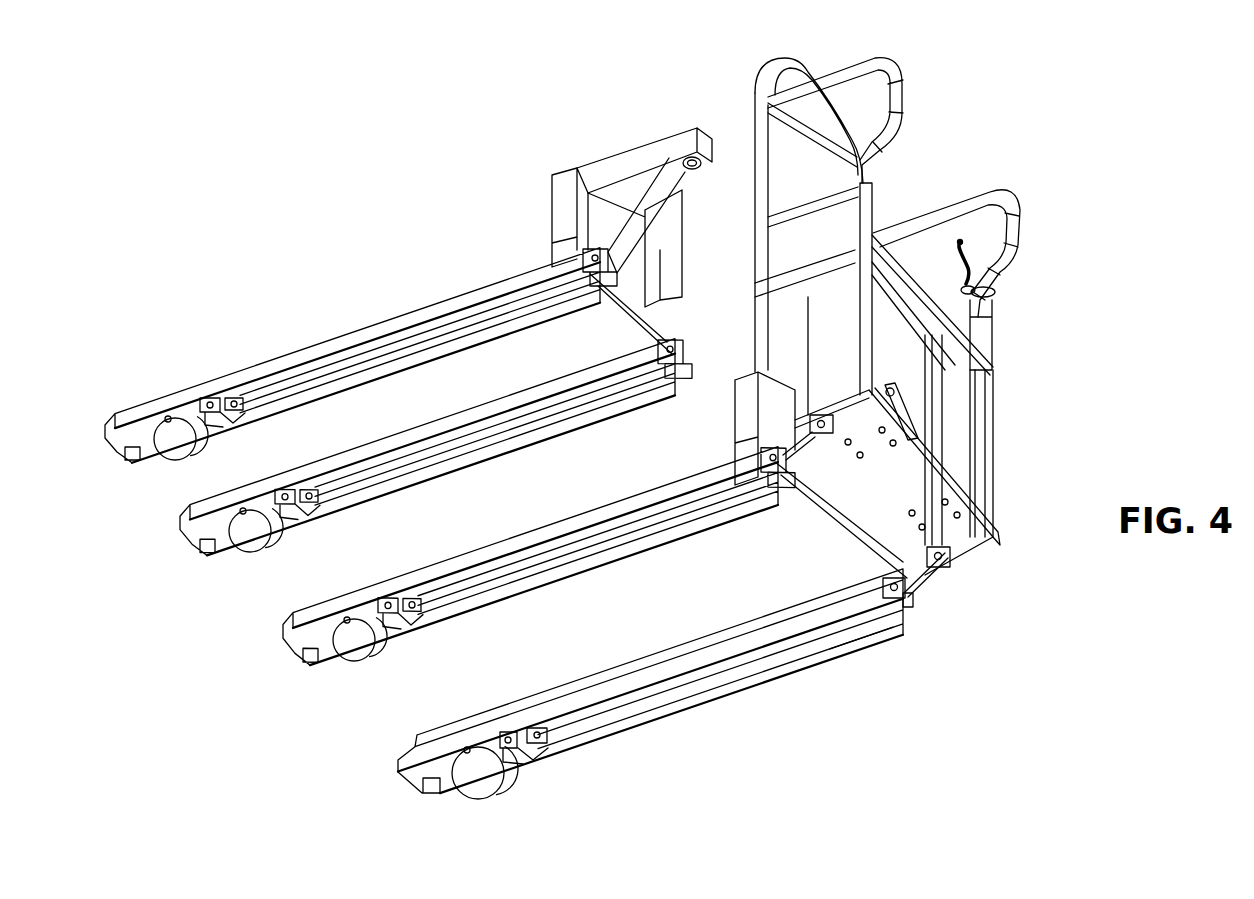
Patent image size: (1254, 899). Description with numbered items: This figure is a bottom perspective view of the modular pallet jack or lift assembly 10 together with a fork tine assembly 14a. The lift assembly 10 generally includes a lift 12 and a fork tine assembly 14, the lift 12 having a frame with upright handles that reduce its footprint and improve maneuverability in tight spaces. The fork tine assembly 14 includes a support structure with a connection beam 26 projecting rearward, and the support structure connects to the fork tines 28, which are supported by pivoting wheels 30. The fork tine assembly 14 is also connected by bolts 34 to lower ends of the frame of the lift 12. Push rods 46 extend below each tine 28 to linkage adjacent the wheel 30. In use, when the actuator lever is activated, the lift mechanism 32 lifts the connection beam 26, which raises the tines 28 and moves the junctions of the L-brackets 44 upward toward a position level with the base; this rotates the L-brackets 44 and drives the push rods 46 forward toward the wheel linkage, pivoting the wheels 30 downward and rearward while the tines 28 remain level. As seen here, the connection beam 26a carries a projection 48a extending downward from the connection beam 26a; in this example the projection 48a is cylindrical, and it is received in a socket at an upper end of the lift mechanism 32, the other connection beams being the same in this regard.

The lift assembly 10 is at (953, 87).
The lift 12 is at (753, 93).
The fork tine assembly 14 is at (740, 373).
The fork tine assembly 14a is at (562, 163).
The connection beam 26 is at (900, 368).
The connection beam 26a is at (663, 140).
The fork tines 28 is at (537, 532).
The pivoting wheels 30 is at (493, 797).
The lift mechanism 32 is at (913, 403).
The bolts 34 is at (953, 557).
The L-brackets 44 is at (935, 578).
The push rods 46 is at (863, 637).
The projection 48a is at (690, 171).